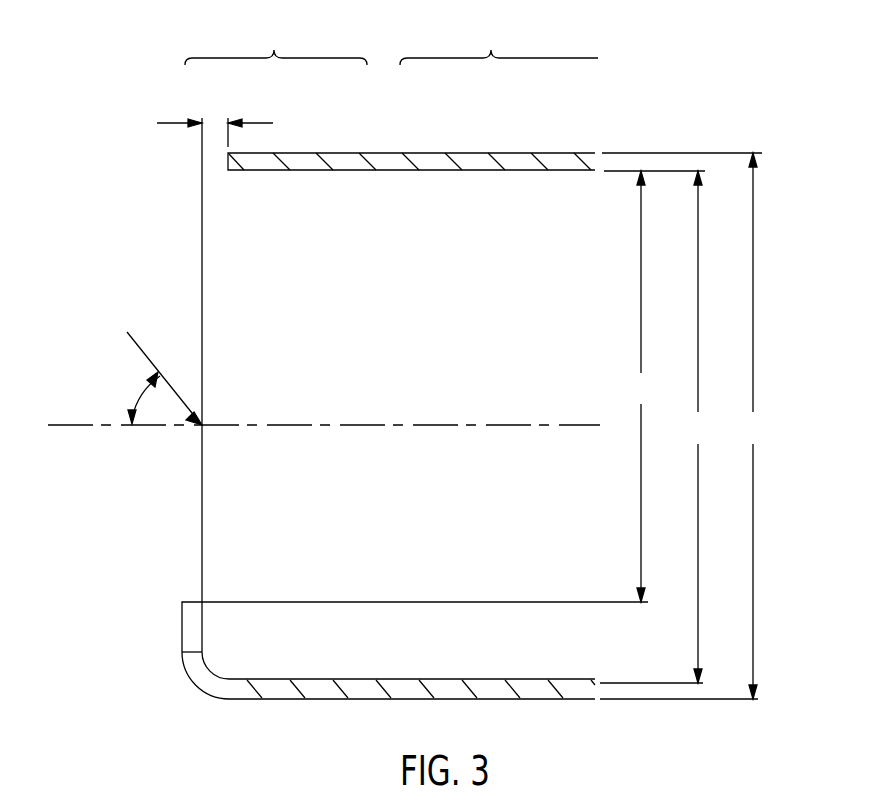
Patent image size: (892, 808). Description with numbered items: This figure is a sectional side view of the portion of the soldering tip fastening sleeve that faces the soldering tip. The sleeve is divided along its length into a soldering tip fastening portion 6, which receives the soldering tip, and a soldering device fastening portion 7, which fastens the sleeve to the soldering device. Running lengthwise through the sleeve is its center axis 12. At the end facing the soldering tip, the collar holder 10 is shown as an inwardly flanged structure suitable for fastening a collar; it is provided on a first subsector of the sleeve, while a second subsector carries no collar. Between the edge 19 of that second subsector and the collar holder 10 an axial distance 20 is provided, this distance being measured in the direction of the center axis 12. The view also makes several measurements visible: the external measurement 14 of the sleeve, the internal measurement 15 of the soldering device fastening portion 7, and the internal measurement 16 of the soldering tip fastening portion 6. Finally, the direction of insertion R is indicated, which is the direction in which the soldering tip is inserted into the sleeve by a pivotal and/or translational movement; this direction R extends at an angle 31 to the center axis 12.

The soldering tip fastening portion 6 is at (276, 42).
The soldering device fastening portion 7 is at (499, 42).
The collar holder 10 is at (198, 676).
The center axis 12 is at (84, 425).
The external measurement 14 is at (754, 426).
The internal measurement of the soldering device fastening portion 15 is at (698, 427).
The internal measurement of the soldering tip fastening portion 16 is at (642, 386).
The edge 19 is at (238, 171).
The axial distance 20 is at (215, 117).
The angle 31 is at (148, 400).
The direction of insertion R is at (157, 367).